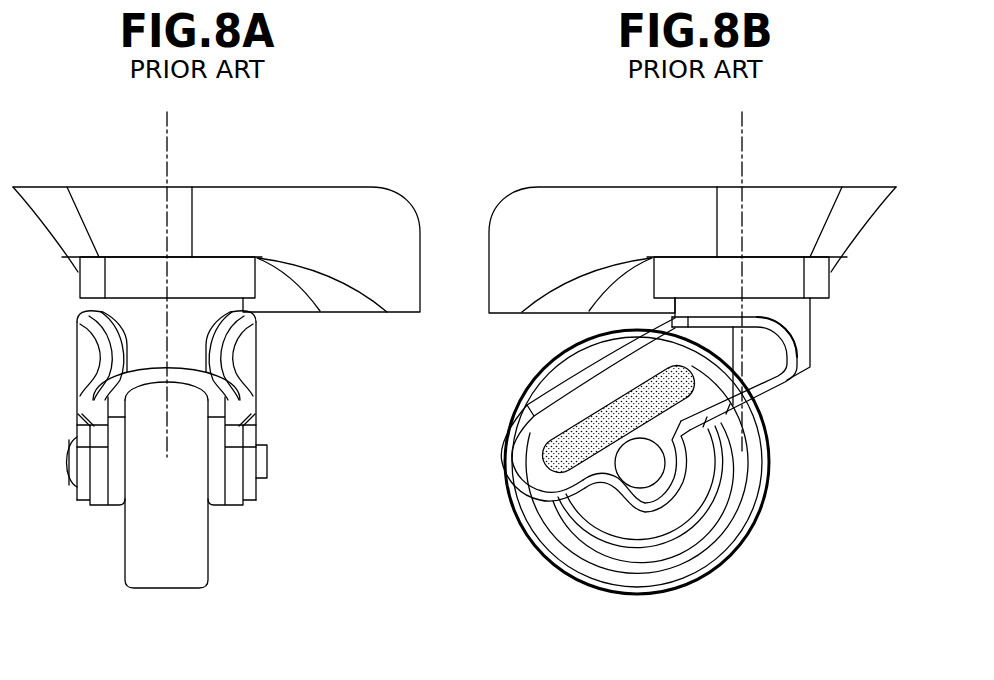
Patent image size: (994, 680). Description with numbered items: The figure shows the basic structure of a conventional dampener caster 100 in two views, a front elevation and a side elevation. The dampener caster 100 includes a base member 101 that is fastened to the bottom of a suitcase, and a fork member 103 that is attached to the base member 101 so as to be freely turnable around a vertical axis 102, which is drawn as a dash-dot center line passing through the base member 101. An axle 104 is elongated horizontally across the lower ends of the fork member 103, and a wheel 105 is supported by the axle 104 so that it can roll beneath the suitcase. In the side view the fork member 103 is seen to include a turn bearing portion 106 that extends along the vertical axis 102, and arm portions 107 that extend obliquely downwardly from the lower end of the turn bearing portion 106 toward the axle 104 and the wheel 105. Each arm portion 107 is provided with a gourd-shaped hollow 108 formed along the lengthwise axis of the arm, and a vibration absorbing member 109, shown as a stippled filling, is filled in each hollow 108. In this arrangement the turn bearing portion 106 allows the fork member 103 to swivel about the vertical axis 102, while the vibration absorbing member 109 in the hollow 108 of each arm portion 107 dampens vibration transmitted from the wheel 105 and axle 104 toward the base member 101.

In FIG. 8A, the dampener caster 100 is at (343, 127).
In FIG. 8A, the base member 101 is at (250, 208).
In FIG. 8B, the base member 101 is at (600, 203).
In FIG. 8A, the vertical axis 102 is at (167, 142).
In FIG. 8B, the vertical axis 102 is at (742, 137).
In FIG. 8A, the fork member 103 is at (248, 412).
In FIG. 8B, the fork member 103 is at (496, 459).
In FIG. 8A, the axle 104 is at (268, 462).
In FIG. 8B, the axle 104 is at (645, 466).
In FIG. 8A, the wheel 105 is at (205, 556).
In FIG. 8B, the wheel 105 is at (572, 562).
In FIG. 8B, the turn bearing portion 106 is at (803, 322).
In FIG. 8B, the arm portion 107 is at (765, 363).
In FIG. 8B, the hollow 108 is at (555, 440).
In FIG. 8B, the vibration absorbing member 109 is at (613, 423).